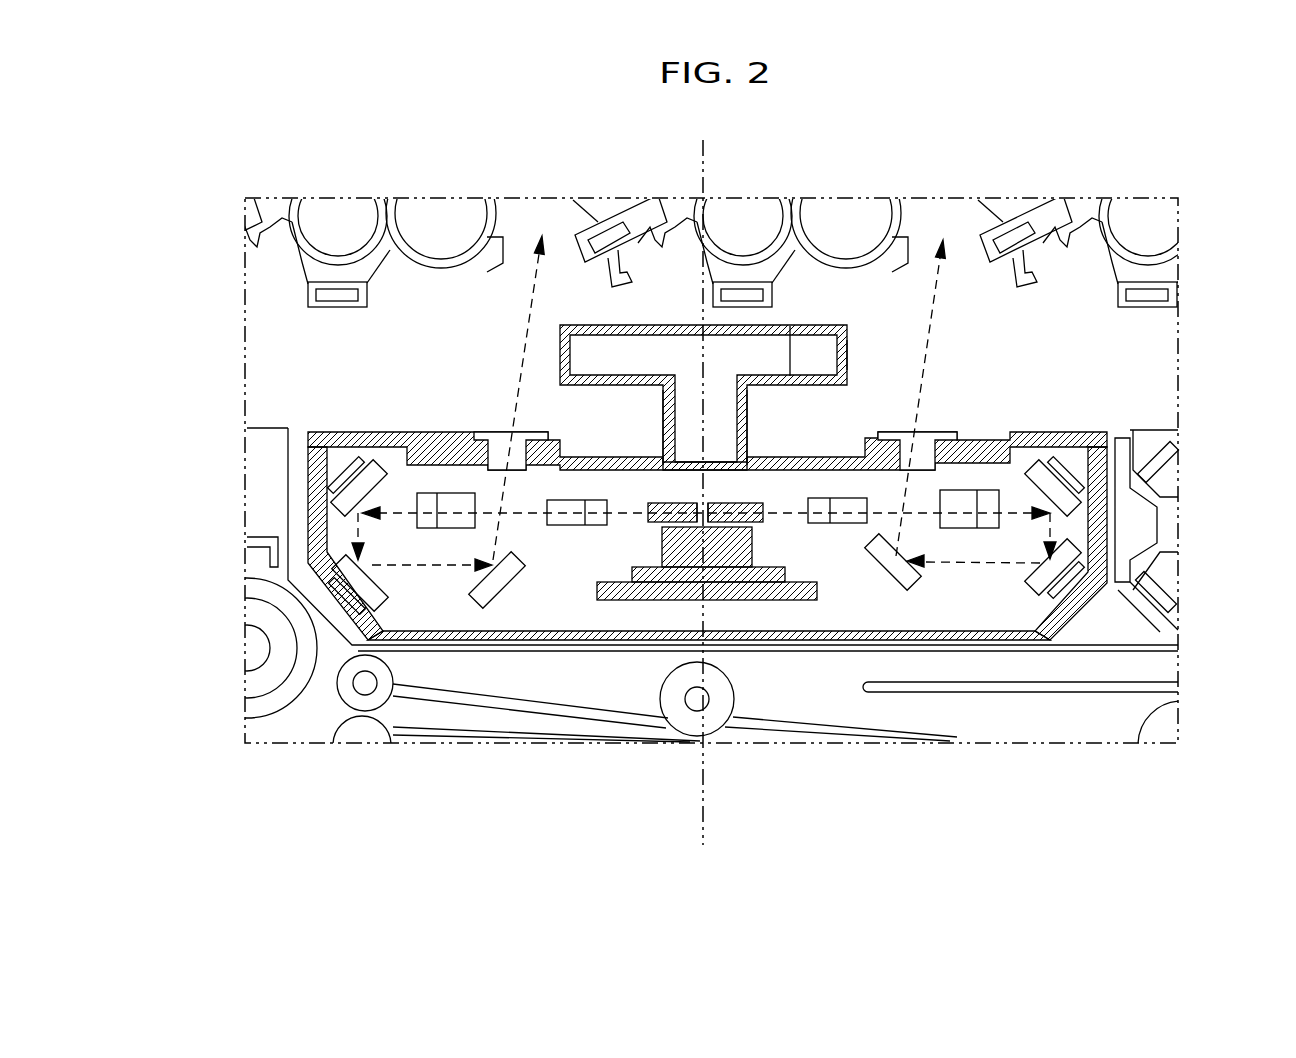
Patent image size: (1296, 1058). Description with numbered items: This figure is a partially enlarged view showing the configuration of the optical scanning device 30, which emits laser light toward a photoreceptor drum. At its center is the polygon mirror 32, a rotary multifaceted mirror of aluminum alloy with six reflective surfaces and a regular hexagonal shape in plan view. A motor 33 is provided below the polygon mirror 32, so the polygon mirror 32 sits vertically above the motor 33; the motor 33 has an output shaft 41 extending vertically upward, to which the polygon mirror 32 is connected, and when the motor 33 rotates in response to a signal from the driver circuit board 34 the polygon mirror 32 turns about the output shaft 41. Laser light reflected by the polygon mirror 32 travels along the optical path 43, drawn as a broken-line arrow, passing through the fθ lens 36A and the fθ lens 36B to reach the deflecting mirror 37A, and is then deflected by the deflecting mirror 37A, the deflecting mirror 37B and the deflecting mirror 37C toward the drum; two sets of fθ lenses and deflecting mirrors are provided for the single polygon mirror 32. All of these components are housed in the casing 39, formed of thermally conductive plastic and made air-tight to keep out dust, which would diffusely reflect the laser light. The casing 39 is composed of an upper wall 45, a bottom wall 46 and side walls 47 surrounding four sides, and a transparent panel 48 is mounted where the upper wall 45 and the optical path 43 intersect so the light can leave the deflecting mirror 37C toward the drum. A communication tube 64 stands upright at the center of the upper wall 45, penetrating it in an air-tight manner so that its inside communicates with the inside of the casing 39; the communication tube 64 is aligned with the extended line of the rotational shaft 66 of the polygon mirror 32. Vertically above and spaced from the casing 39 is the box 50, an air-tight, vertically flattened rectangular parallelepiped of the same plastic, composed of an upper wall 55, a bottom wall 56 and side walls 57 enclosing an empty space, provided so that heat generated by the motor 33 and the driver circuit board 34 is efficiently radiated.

The optical scanning device 30 is at (714, 528).
The polygon mirror 32 is at (648, 512).
The motor 33 is at (753, 553).
The driver circuit board 34 is at (748, 600).
The fθ lens 36A is at (582, 500).
The fθ lens 36B is at (428, 493).
The deflecting mirror 37A is at (368, 460).
The deflecting mirror 37B is at (385, 600).
The deflecting mirror 37C is at (497, 600).
The casing 39 is at (305, 430).
The output shaft 41 is at (705, 503).
The optical path 43 is at (526, 326).
The upper wall 45 is at (1082, 432).
The bottom wall 46 is at (598, 632).
The side walls 47 is at (318, 510).
The transparent panel 48 is at (500, 430).
The box 50 is at (845, 328).
The upper wall 55 is at (790, 325).
The bottom wall 56 is at (760, 387).
The side walls 57 is at (846, 353).
The communication tube 64 is at (663, 395).
The rotational shaft 66 is at (652, 484).